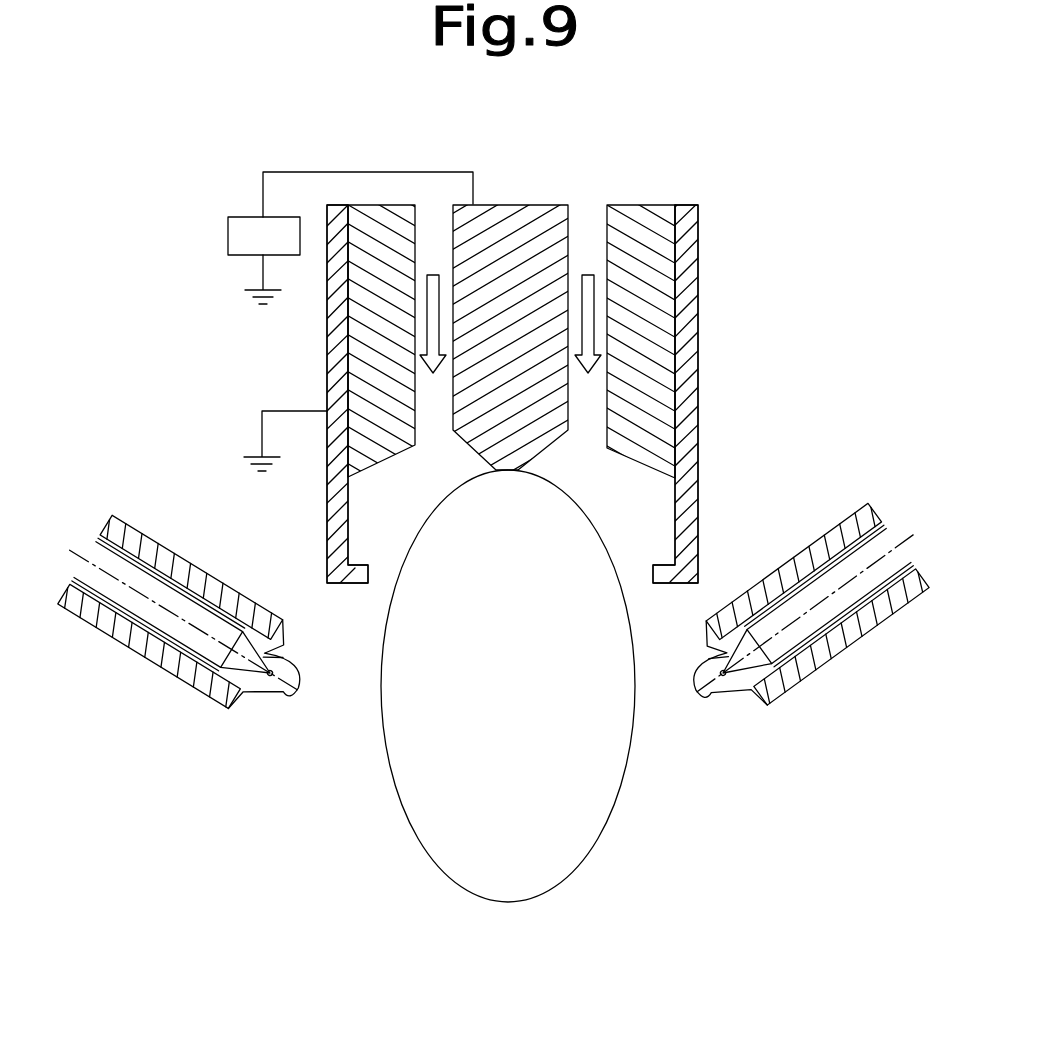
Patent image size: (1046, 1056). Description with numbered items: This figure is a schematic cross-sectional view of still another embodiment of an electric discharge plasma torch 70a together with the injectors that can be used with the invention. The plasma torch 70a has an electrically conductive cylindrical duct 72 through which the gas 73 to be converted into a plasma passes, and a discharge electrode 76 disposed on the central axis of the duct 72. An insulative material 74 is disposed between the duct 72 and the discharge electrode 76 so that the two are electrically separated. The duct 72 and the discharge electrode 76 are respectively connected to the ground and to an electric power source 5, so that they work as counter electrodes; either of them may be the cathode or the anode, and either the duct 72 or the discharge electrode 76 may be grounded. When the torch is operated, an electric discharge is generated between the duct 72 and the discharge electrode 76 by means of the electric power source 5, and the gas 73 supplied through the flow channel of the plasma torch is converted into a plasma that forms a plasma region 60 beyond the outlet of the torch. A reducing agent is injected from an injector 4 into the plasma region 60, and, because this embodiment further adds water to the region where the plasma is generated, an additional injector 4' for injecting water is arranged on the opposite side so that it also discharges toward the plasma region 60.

The electric power source 5 is at (245, 230).
The electric discharge plasma torch 70a is at (770, 184).
The electrically conductive cylindrical duct 72 is at (687, 302).
The insulative material 74 is at (645, 225).
The discharge electrode 76 is at (525, 237).
The gas 73 is at (590, 273).
The plasma region 60 is at (618, 800).
The injector 4 is at (807, 574).
The additional injector 4' is at (181, 574).